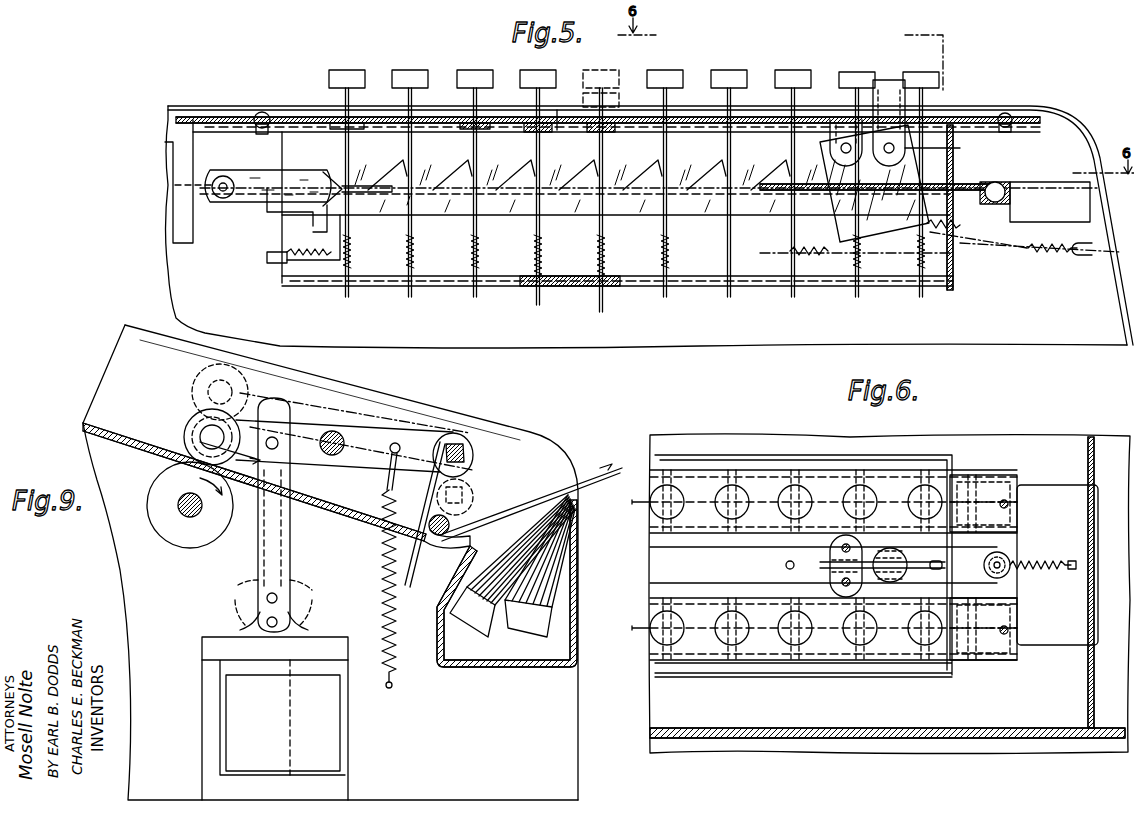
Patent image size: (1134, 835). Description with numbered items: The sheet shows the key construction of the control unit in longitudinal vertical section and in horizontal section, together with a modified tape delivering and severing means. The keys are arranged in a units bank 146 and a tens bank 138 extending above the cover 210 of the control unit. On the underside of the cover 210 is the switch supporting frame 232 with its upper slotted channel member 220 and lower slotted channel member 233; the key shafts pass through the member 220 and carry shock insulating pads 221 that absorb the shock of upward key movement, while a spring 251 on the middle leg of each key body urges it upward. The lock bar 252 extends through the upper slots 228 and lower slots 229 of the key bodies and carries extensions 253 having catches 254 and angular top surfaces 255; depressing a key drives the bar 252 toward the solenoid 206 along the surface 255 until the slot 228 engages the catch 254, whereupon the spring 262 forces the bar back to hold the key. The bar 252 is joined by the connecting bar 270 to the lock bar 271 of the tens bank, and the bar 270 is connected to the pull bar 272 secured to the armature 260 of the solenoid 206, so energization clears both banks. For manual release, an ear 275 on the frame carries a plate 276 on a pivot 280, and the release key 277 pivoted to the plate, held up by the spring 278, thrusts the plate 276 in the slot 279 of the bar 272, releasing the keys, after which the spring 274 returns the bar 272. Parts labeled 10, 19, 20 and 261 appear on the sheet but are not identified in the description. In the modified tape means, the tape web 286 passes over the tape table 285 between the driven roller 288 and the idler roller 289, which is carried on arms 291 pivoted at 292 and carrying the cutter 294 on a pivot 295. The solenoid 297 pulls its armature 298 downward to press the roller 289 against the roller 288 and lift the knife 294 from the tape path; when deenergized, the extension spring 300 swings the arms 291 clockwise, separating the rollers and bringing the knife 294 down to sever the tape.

In FIG. 5, the machine frame 10 is at (217, 104).
In FIG. 6, the machine frame 10 is at (658, 756).
In FIG. 5, the screw 19 is at (990, 110).
In FIG. 6, the base plate 20 is at (733, 740).
In FIG. 6, the tens bank 138 is at (797, 652).
In FIG. 6, the units bank 146 is at (809, 488).
In FIG. 5, the solenoid 206 is at (178, 250).
In FIG. 5, the cover 210 is at (1041, 117).
In FIG. 5, the upper slotted channel member 220 is at (268, 130).
In FIG. 5, the shock insulating pads 221 is at (530, 124).
In FIG. 5, the upper slots 228 is at (553, 128).
In FIG. 5, the lower slots 229 is at (533, 214).
In FIG. 5, the switch supporting frame 232 is at (582, 300).
In FIG. 5, the lower slotted channel member 233 is at (438, 288).
In FIG. 5, the spring 251 is at (546, 266).
In FIG. 5, the lock bar 252 is at (572, 216).
In FIG. 6, the lock bar 252 is at (962, 484).
In FIG. 5, the extensions 253 is at (592, 160).
In FIG. 5, the catches 254 is at (548, 176).
In FIG. 5, the angular top surfaces 255 is at (450, 186).
In FIG. 5, the armature 260 is at (206, 197).
In FIG. 5, the bracket arm 261 is at (328, 262).
In FIG. 5, the spring 262 is at (292, 262).
In FIG. 5, the connecting bar 270 is at (1012, 194).
In FIG. 6, the connecting bar 270 is at (1004, 546).
In FIG. 6, the lock bar 271 is at (965, 665).
In FIG. 5, the pull bar 272 is at (370, 185).
In FIG. 6, the pull bar 272 is at (740, 558).
In FIG. 5, the spring 274 is at (1040, 254).
In FIG. 5, the ear 275 is at (838, 132).
In FIG. 6, the ear 275 is at (838, 541).
In FIG. 5, the plate 276 is at (958, 148).
In FIG. 6, the plate 276 is at (828, 568).
In FIG. 5, the release key 277 is at (892, 80).
In FIG. 6, the release key 277 is at (896, 556).
In FIG. 5, the spring 278 is at (1034, 246).
In FIG. 6, the spring 278 is at (1043, 561).
In FIG. 5, the slot 279 is at (935, 188).
In FIG. 6, the slot 279 is at (935, 571).
In FIG. 5, the pivot 280 is at (855, 150).
In FIG. 9, the tape table 285 is at (122, 445).
In FIG. 9, the tape web 286 is at (190, 402).
In FIG. 9, the driven roller 288 is at (188, 547).
In FIG. 9, the idler roller 289 is at (185, 416).
In FIG. 9, the arms 291 is at (385, 430).
In FIG. 9, the pivot 292 is at (340, 432).
In FIG. 9, the cutter 294 is at (448, 434).
In FIG. 9, the pivot 295 is at (462, 468).
In FIG. 9, the solenoid 297 is at (350, 746).
In FIG. 9, the armature 298 is at (295, 547).
In FIG. 9, the extension spring 300 is at (382, 612).